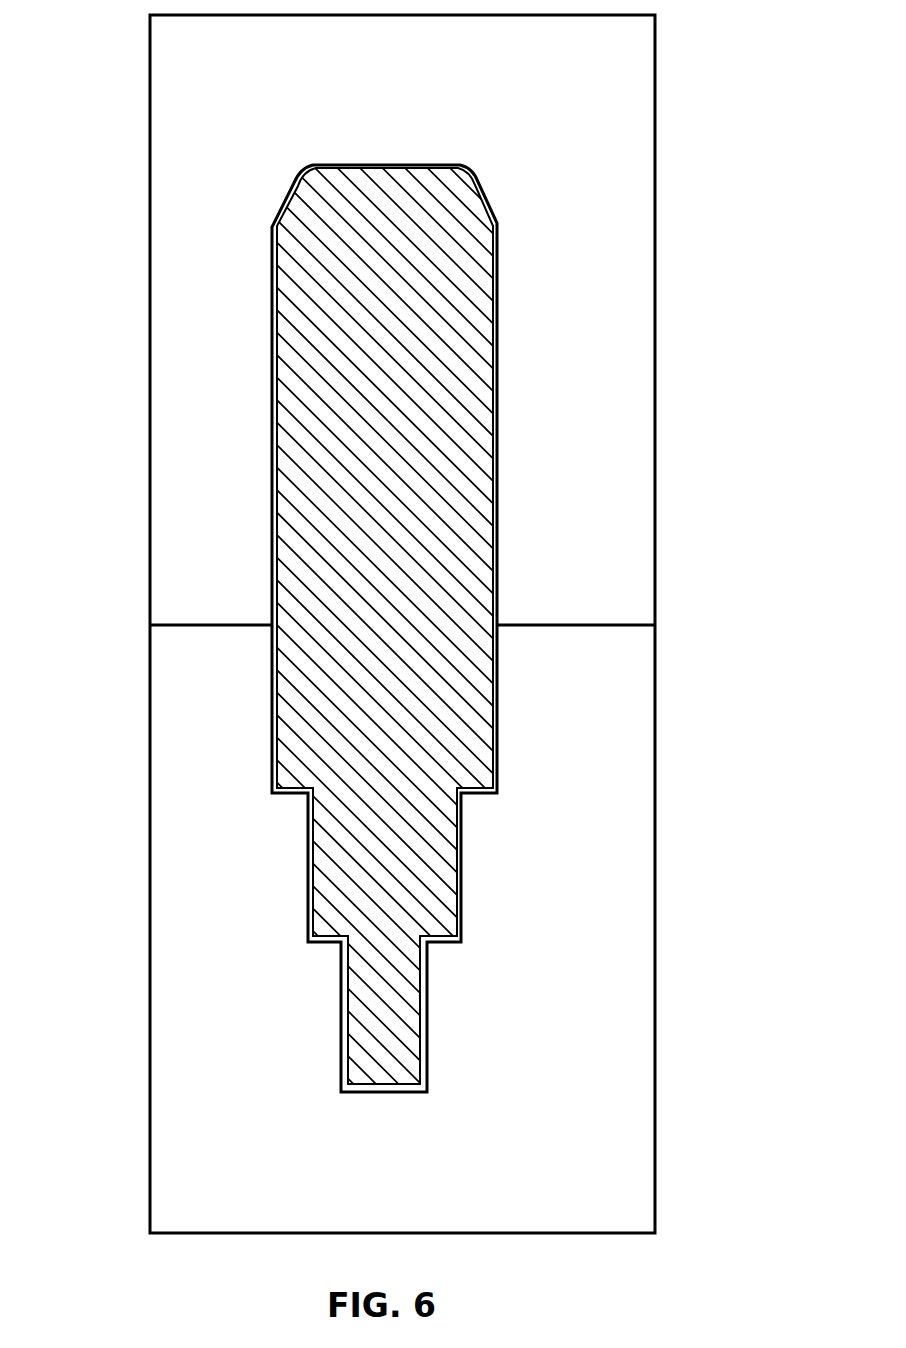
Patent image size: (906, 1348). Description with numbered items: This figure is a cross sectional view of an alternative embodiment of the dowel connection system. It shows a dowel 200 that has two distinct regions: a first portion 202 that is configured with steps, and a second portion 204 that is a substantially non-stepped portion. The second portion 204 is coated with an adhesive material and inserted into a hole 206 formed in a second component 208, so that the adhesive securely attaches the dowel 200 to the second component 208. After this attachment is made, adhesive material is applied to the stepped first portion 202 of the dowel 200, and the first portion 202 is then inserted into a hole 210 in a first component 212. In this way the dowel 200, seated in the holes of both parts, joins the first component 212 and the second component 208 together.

The dowel 200 is at (378, 519).
The first portion 202 is at (312, 878).
The second portion 204 is at (273, 435).
The hole 206 is at (500, 371).
The second component 208 is at (655, 238).
The hole 210 is at (432, 993).
The first component 212 is at (655, 747).